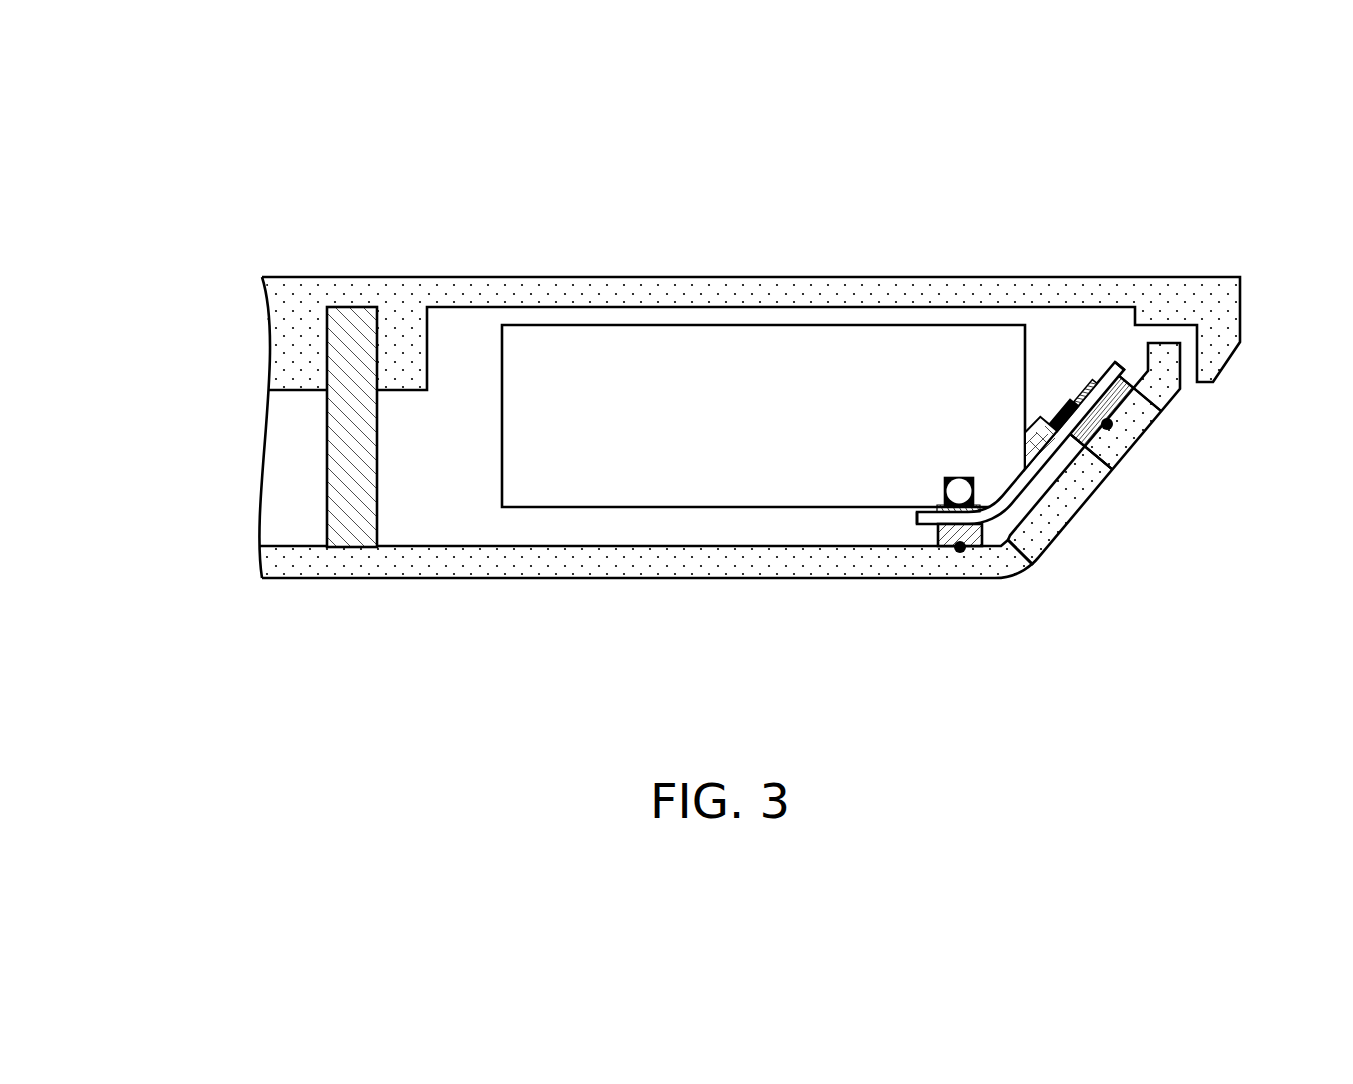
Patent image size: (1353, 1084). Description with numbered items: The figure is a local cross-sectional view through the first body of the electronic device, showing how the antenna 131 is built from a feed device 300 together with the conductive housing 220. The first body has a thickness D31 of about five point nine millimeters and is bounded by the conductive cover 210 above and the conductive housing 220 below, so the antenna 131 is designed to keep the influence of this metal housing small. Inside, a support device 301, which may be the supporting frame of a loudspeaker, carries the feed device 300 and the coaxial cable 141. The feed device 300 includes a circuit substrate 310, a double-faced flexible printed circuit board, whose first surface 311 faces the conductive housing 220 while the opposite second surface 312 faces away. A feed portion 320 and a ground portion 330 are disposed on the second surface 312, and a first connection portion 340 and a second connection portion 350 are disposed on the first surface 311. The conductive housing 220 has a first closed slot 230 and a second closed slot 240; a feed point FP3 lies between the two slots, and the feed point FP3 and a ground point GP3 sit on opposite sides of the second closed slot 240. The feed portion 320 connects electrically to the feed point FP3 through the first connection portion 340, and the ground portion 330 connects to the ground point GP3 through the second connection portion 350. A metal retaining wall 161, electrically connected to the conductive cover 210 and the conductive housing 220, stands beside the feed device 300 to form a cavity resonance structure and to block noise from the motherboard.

The antenna 131 is at (735, 636).
The coaxial cable 141 is at (1022, 440).
The metal retaining wall 161 is at (377, 500).
The conductive cover 210 is at (818, 277).
The conductive housing 220 is at (627, 578).
The first closed slot 230 is at (1150, 402).
The second closed slot 240 is at (1057, 515).
The feed device 300 is at (870, 525).
The support device 301 is at (502, 428).
The circuit substrate 310 is at (1120, 382).
The first surface 311 is at (1130, 384).
The second surface 312 is at (1107, 360).
The feed portion 320 is at (1070, 398).
The ground portion 330 is at (918, 513).
The first connection portion 340 is at (1082, 440).
The second connection portion 350 is at (937, 535).
The thickness D31 is at (215, 278).
The feed point FP3 is at (1109, 428).
The ground point GP3 is at (960, 552).